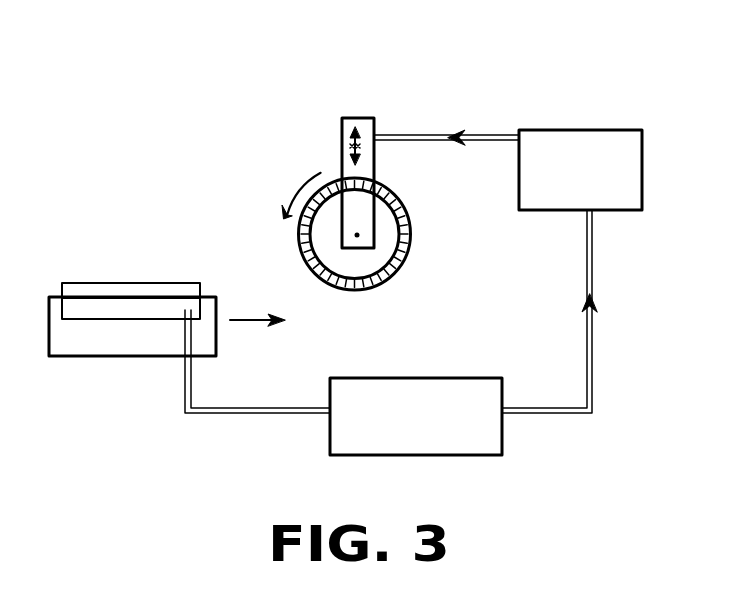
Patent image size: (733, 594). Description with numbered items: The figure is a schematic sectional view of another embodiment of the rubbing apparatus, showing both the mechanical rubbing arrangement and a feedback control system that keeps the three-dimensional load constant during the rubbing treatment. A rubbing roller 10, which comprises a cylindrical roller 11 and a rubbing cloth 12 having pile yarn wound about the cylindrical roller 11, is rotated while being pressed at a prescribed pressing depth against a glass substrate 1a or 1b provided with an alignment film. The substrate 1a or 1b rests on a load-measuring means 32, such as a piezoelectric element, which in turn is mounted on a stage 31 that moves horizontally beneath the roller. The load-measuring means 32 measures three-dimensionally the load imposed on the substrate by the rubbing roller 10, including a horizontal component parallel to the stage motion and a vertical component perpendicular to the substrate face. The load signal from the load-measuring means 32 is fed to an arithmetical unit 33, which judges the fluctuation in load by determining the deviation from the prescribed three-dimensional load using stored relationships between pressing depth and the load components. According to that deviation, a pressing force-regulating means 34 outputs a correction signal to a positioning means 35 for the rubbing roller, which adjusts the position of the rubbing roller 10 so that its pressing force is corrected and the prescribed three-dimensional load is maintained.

The glass substrate 1a is at (131, 261).
The glass substrate 1b is at (93, 293).
The rubbing roller 10 is at (404, 200).
The cylindrical roller 11 is at (373, 262).
The rubbing cloth 12 is at (412, 239).
The stage 31 is at (64, 344).
The load-measuring means 32 is at (138, 312).
The arithmetical unit 33 is at (410, 395).
The pressing force-regulating means 34 is at (580, 141).
The positioning means 35 is at (363, 120).